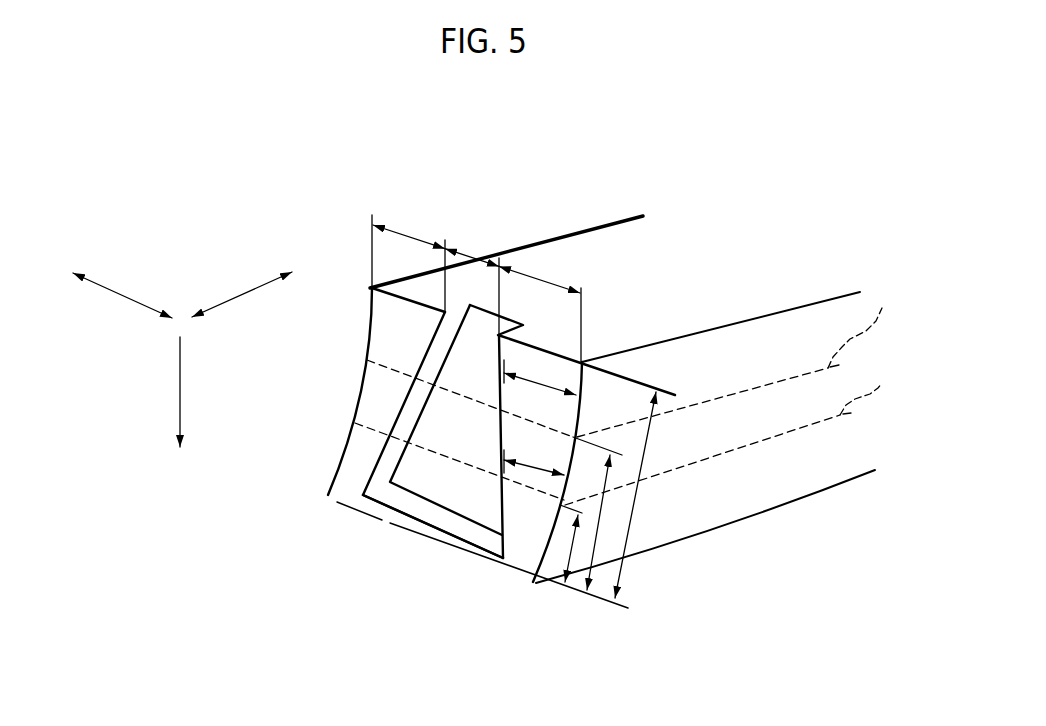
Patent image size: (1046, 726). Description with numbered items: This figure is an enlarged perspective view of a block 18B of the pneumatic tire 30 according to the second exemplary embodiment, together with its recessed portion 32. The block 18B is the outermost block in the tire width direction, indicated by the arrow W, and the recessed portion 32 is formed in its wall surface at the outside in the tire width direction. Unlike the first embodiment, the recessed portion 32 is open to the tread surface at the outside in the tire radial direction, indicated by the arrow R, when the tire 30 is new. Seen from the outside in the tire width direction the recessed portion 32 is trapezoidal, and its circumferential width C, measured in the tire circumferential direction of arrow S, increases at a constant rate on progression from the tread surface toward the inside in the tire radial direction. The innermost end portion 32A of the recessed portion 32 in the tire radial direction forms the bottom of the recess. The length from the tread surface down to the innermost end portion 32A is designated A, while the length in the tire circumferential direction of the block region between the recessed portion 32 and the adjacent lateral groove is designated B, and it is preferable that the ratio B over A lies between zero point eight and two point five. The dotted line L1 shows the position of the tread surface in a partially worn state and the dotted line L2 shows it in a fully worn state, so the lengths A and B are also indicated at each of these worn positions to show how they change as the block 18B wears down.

The pneumatic tire 30 is at (347, 200).
The recessed portion 32 is at (443, 452).
The innermost end portion of the recessed portion 32A is at (422, 516).
The block 18B is at (620, 220).
The dotted line showing partially worn tread surface L1 is at (640, 375).
The dotted line showing fully worn tread surface L2 is at (635, 442).
The length between tread surface and innermost end portion A is at (636, 505).
The circumferential length of region between recessed portion and lateral groove B is at (410, 236).
The circumferential width of recessed portion C is at (477, 257).
The tire circumferential direction arrow S is at (125, 295).
The tire width direction arrow W is at (243, 293).
The tire radial direction arrow R is at (180, 385).